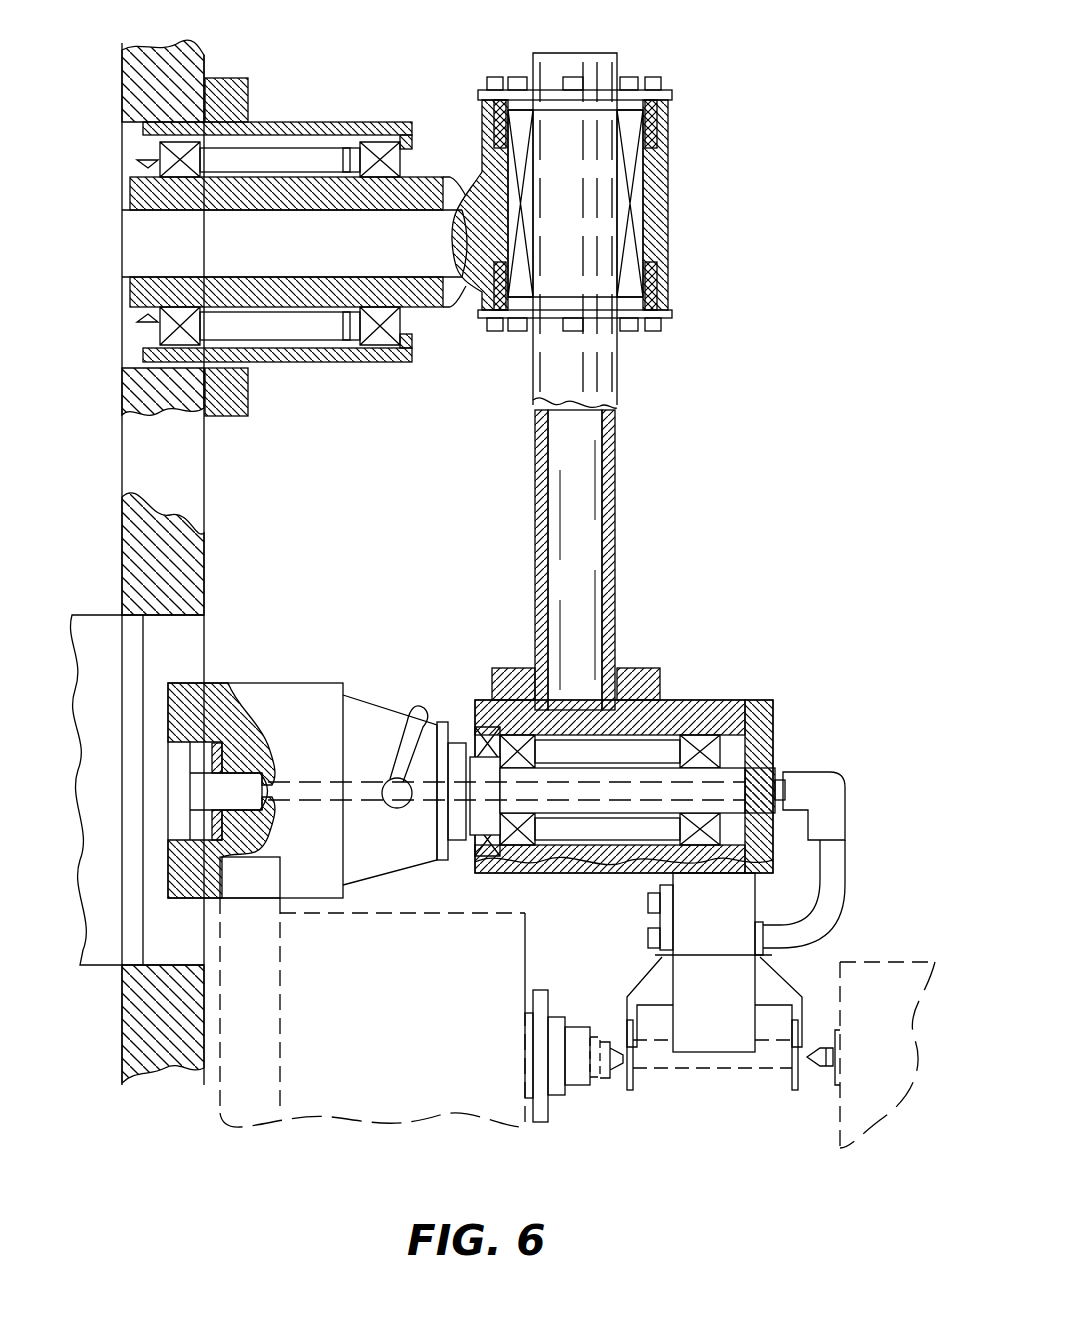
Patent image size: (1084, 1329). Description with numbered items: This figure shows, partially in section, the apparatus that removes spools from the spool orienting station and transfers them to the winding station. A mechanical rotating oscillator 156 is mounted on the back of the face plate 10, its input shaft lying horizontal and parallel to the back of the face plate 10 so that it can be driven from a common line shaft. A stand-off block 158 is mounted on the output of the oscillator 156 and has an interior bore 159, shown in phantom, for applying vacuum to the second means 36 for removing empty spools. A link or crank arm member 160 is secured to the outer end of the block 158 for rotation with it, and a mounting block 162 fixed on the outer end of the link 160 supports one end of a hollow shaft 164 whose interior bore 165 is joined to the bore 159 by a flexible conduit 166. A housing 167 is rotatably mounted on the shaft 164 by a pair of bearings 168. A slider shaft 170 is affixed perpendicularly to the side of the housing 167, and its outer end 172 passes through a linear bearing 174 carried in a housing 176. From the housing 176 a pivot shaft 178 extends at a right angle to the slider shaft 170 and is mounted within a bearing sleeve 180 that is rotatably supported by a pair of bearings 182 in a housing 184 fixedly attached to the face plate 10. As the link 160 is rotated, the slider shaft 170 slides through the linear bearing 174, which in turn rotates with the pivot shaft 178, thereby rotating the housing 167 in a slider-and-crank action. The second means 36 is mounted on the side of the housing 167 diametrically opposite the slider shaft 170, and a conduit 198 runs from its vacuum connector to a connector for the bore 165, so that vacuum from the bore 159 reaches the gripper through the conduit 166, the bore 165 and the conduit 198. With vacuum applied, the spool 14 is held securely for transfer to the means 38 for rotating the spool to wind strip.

The face plate 10 is at (185, 1068).
The spool 14 is at (686, 1066).
The second means for removing spools 36 is at (792, 984).
The means for rotating the spool 38 is at (475, 1108).
The mechanical rotating oscillator 156 is at (107, 960).
The stand-off block 158 is at (238, 690).
The interior bore 159 is at (316, 755).
The link or crank arm member 160 is at (352, 695).
The mounting block 162 is at (449, 720).
The hollow shaft 164 is at (640, 773).
The interior bore 165 is at (617, 797).
The flexible conduit 166 is at (408, 702).
The housing 167 is at (576, 856).
The bearings 168 is at (717, 708).
The slider shaft 170 is at (618, 495).
The outer end of slider shaft 172 is at (575, 53).
The linear bearing 174 is at (522, 285).
The housing 176 is at (478, 280).
The pivot shaft 178 is at (316, 242).
The bearing sleeve 180 is at (336, 283).
The bearings 182 is at (177, 313).
The housing 184 is at (308, 125).
The conduit 198 is at (838, 885).